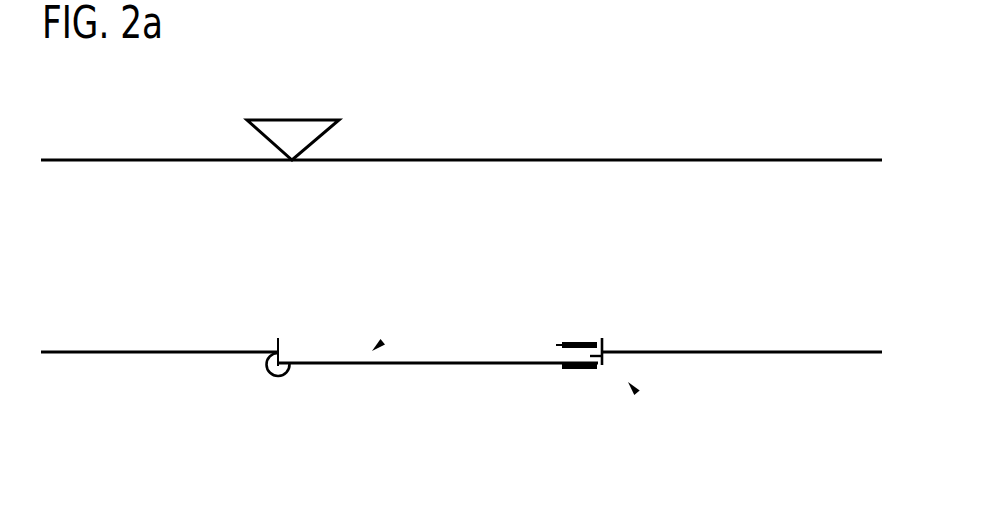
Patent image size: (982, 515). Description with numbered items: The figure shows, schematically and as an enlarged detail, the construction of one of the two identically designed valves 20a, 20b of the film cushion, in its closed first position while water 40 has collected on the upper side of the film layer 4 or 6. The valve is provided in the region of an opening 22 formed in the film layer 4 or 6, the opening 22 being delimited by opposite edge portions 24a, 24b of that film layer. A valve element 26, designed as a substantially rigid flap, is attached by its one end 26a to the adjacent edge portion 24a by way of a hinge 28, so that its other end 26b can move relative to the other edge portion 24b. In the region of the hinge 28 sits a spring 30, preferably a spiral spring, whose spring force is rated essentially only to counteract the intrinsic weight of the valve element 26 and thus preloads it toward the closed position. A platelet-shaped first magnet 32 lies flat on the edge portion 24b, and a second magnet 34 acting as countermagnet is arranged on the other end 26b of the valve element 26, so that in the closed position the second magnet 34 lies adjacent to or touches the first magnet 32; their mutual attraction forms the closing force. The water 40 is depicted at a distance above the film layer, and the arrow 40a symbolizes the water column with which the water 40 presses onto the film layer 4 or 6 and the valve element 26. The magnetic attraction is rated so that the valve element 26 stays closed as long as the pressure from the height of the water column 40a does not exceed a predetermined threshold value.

The water 40 is at (604, 158).
The water column 40a is at (292, 119).
The opening 22 is at (382, 342).
The edge portion 24a is at (268, 351).
The edge portion 24b is at (622, 350).
The valve element 26 is at (438, 366).
The one end of the valve element 26a is at (304, 366).
The other end of the valve element 26b is at (546, 366).
The hinge 28 is at (284, 352).
The spring 30 is at (266, 365).
The first magnet 32 is at (578, 341).
The second magnet 34 is at (582, 370).
The film layer 4 is at (805, 316).
The film layer 6 is at (803, 350).
The valve 20a is at (701, 419).
The valve 20b is at (637, 393).